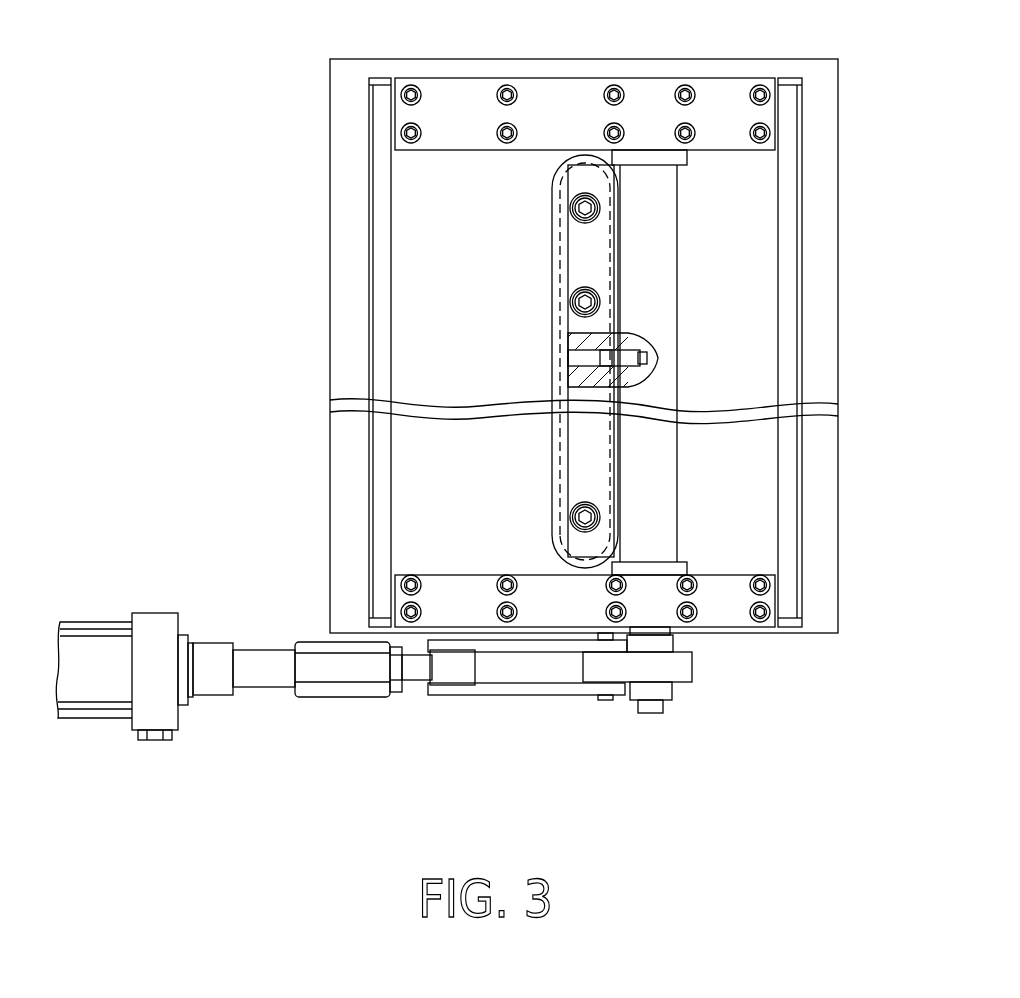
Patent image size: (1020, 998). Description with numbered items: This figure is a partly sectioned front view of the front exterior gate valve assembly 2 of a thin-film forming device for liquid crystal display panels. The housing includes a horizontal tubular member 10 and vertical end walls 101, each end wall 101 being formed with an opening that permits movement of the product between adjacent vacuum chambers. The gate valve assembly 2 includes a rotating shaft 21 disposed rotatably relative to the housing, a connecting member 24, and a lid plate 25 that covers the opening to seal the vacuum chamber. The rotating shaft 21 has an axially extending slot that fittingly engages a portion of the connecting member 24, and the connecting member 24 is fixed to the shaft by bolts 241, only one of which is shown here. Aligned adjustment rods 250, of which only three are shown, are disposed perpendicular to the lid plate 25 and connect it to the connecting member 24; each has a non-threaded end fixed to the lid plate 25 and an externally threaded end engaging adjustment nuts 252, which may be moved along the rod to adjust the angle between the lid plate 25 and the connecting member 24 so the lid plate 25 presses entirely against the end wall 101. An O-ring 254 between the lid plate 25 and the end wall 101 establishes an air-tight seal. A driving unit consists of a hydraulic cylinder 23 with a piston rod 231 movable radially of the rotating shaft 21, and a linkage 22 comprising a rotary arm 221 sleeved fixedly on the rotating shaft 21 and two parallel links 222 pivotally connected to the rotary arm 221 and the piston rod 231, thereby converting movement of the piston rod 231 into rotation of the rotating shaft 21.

The horizontal tubular member 10 is at (838, 140).
The vertical end wall 101 is at (502, 175).
The rotating shaft 21 is at (645, 260).
The connecting member 24 is at (583, 245).
The lid plate 25 is at (557, 273).
The O-ring 254 is at (610, 238).
The adjustment rod 250 is at (585, 207).
The adjustment nut 252 is at (575, 205).
The bolt 241 is at (572, 358).
The front exterior gate valve assembly 2 is at (433, 662).
The hydraulic cylinder 23 is at (103, 658).
The piston rod 231 is at (248, 673).
The linkage 22 is at (552, 723).
The parallel link 222 is at (520, 690).
The rotary arm 221 is at (604, 667).